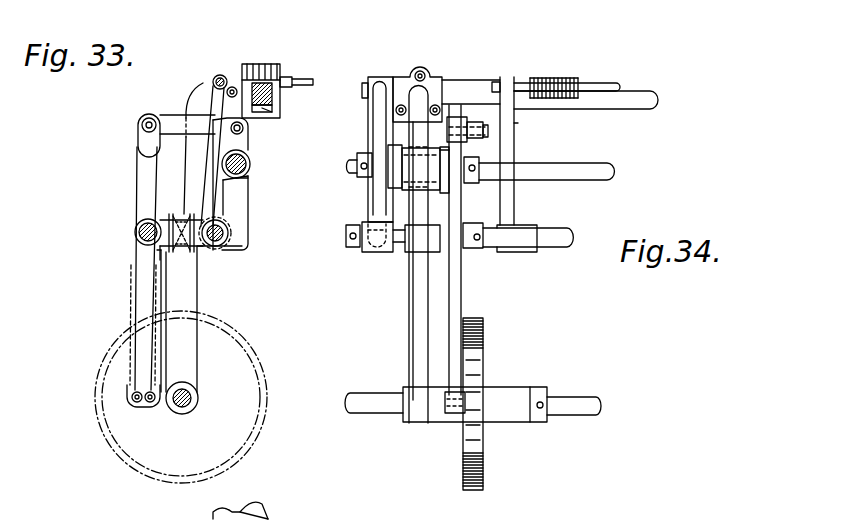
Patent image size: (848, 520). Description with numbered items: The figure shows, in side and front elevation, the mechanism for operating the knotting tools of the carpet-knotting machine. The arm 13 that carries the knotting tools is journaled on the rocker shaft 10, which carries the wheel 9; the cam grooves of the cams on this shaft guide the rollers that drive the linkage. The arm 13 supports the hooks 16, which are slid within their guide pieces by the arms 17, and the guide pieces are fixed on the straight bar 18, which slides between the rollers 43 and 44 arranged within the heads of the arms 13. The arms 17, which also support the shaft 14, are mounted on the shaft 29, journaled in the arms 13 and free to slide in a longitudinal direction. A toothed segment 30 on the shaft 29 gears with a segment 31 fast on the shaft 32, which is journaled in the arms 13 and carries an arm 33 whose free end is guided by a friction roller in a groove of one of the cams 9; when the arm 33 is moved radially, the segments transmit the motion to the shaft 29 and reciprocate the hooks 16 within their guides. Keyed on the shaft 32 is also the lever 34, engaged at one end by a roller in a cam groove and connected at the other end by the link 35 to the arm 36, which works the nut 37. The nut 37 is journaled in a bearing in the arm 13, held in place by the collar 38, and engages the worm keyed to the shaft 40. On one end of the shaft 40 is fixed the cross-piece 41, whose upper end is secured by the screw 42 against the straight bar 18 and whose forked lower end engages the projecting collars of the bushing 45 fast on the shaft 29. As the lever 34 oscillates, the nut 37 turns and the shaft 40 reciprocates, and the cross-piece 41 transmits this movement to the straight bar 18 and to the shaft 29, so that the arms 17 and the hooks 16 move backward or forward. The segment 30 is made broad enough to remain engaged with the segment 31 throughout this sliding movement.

In FIG. 33, the wheel 9 is at (249, 352).
In FIG. 34, the wheel 9 is at (483, 346).
In FIG. 33, the rocker shaft 10 is at (198, 396).
In FIG. 34, the rocker shaft 10 is at (559, 400).
In FIG. 33, the arm 13 is at (187, 297).
In FIG. 34, the arm 13 is at (411, 318).
In FIG. 33, the shaft 14 is at (215, 77).
In FIG. 34, the shaft 14 is at (594, 84).
In FIG. 33, the hooks 16 is at (298, 77).
In FIG. 33, the arms 17 is at (213, 207).
In FIG. 34, the arms 17 is at (512, 126).
In FIG. 34, the straight bar 18 is at (462, 93).
In FIG. 33, the shaft 29 is at (236, 251).
In FIG. 33, the toothed segment 30 is at (195, 218).
In FIG. 33, the segment 31 is at (160, 247).
In FIG. 33, the shaft 32 is at (139, 228).
In FIG. 34, the shaft 32 is at (553, 240).
In FIG. 33, the arm 33 is at (128, 377).
In FIG. 33, the lever 34 is at (147, 159).
In FIG. 34, the lever 34 is at (455, 217).
In FIG. 33, the link 35 is at (175, 117).
In FIG. 34, the link 35 is at (468, 118).
In FIG. 33, the arm 36 is at (248, 142).
In FIG. 34, the arm 36 is at (447, 165).
In FIG. 34, the nut 37 is at (428, 188).
In FIG. 34, the collar 38 is at (440, 150).
In FIG. 33, the shaft 40 is at (250, 166).
In FIG. 34, the shaft 40 is at (582, 173).
In FIG. 33, the cross-piece 41 is at (240, 202).
In FIG. 34, the cross-piece 41 is at (372, 197).
In FIG. 34, the screw 42 is at (366, 86).
In FIG. 33, the roller 43 is at (267, 108).
In FIG. 34, the roller 43 is at (320, 118).
In FIG. 33, the roller 44 is at (260, 65).
In FIG. 34, the roller 44 is at (424, 68).
In FIG. 34, the bushing 45 is at (358, 247).